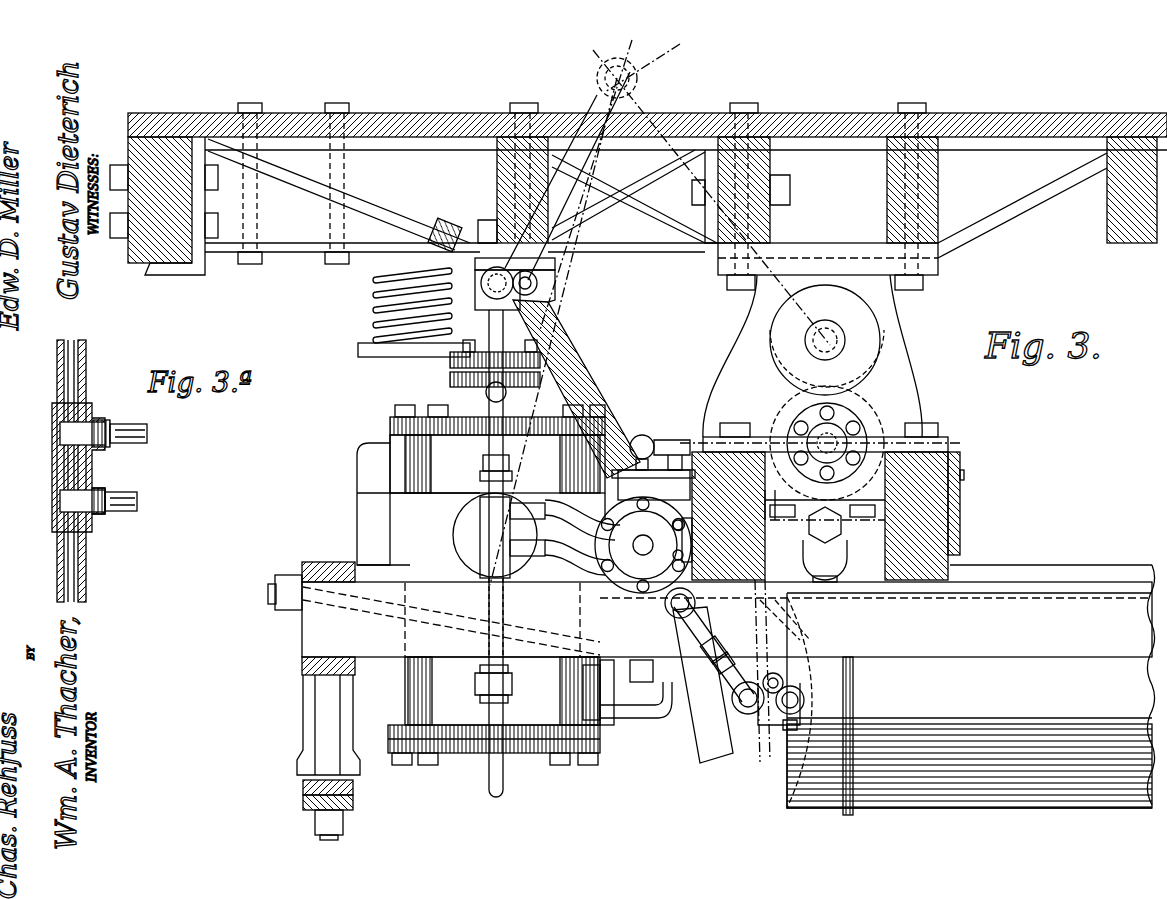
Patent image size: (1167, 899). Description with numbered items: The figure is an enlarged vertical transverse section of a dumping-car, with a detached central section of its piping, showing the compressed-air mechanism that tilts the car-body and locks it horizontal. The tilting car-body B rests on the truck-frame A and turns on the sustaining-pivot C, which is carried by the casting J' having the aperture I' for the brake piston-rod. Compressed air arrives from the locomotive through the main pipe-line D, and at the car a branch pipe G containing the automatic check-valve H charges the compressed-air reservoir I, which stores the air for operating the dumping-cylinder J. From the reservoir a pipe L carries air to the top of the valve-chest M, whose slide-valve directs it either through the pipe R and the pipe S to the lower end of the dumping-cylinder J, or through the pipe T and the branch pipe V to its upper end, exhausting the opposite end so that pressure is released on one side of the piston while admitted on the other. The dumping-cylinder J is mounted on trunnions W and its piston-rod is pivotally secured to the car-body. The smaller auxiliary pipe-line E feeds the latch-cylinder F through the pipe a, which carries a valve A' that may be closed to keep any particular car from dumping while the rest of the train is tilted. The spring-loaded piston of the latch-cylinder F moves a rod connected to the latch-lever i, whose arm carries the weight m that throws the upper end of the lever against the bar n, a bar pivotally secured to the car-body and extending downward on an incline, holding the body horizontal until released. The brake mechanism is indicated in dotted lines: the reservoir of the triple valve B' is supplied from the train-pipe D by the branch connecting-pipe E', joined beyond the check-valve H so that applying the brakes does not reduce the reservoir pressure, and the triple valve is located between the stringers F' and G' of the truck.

In FIG. 3, the truck-frame A is at (710, 691).
In FIG. 3, the valve A' is at (707, 645).
In FIG. 3, the tilting car-body B is at (647, 150).
In FIG. 3, the reservoir of the triple valve B' is at (826, 427).
In FIG. 3, the sustaining-pivot C is at (825, 340).
In FIG. 3, the main pipe-line D is at (753, 675).
In FIG. 3, the auxiliary pipe-line E is at (753, 716).
In FIG. 3, the branch connecting-pipe E' is at (786, 702).
In FIG. 3, the latch-cylinder F is at (653, 516).
In FIG. 3, the stringer F' is at (662, 489).
In FIG. 3, the branch pipe G is at (803, 706).
In FIG. 3, the stringer G' is at (978, 476).
In FIG. 3, the automatic check-valve H is at (786, 683).
In FIG. 3, the compressed-air reservoir I is at (971, 690).
In FIG. 3, the aperture I' is at (820, 443).
In FIG. 3, the dumping-cylinder J is at (481, 585).
In FIG. 3, the casting J' is at (821, 363).
In FIG. 3, the pipe L is at (760, 580).
In FIG. 3, the valve-chest M is at (640, 445).
In FIG. 3, the pipe R is at (560, 551).
In FIG. 3A, the pipe R is at (122, 501).
In FIG. 3, the pipe S is at (503, 600).
In FIG. 3A, the pipe S is at (86, 560).
In FIG. 3, the pipe T is at (550, 534).
In FIG. 3A, the pipe T is at (147, 434).
In FIG. 3, the branch pipe V is at (485, 450).
In FIG. 3A, the branch pipe V is at (57, 380).
In FIG. 3, the trunnions W is at (470, 538).
In FIG. 3, the pipe a is at (714, 652).
In FIG. 3, the latch-lever i is at (618, 692).
In FIG. 3, the weight m is at (636, 719).
In FIG. 3, the bar n is at (560, 343).